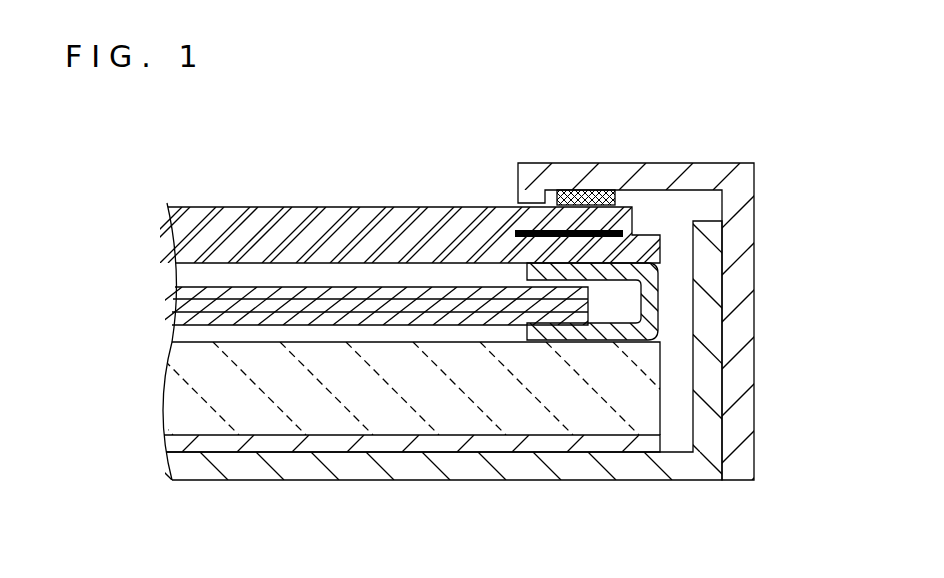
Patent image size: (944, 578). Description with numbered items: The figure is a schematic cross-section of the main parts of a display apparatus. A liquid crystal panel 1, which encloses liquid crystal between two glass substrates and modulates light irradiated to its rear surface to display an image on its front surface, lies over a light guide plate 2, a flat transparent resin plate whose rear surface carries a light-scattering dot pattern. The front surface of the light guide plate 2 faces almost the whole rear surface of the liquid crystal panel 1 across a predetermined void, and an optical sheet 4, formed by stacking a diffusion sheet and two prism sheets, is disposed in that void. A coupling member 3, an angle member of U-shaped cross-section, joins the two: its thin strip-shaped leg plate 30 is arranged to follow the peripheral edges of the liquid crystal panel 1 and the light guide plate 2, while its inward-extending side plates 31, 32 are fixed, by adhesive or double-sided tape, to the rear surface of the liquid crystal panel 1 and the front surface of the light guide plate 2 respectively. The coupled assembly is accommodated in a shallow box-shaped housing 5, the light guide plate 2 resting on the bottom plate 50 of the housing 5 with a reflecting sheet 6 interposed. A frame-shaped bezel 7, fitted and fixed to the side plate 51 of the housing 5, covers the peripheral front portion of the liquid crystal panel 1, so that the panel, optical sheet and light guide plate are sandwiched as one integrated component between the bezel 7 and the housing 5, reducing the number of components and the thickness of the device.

The liquid crystal panel 1 is at (237, 214).
The light guide plate 2 is at (180, 392).
The coupling member 3 is at (615, 347).
The optical sheet 4 is at (198, 287).
The housing 5 is at (533, 391).
The reflecting sheet 6 is at (180, 445).
The bezel 7 is at (680, 167).
The leg plate 30 is at (648, 315).
The side plate 31 is at (527, 274).
The side plate 32 is at (607, 335).
The bottom plate 50 is at (578, 473).
The side plate 51 is at (713, 392).